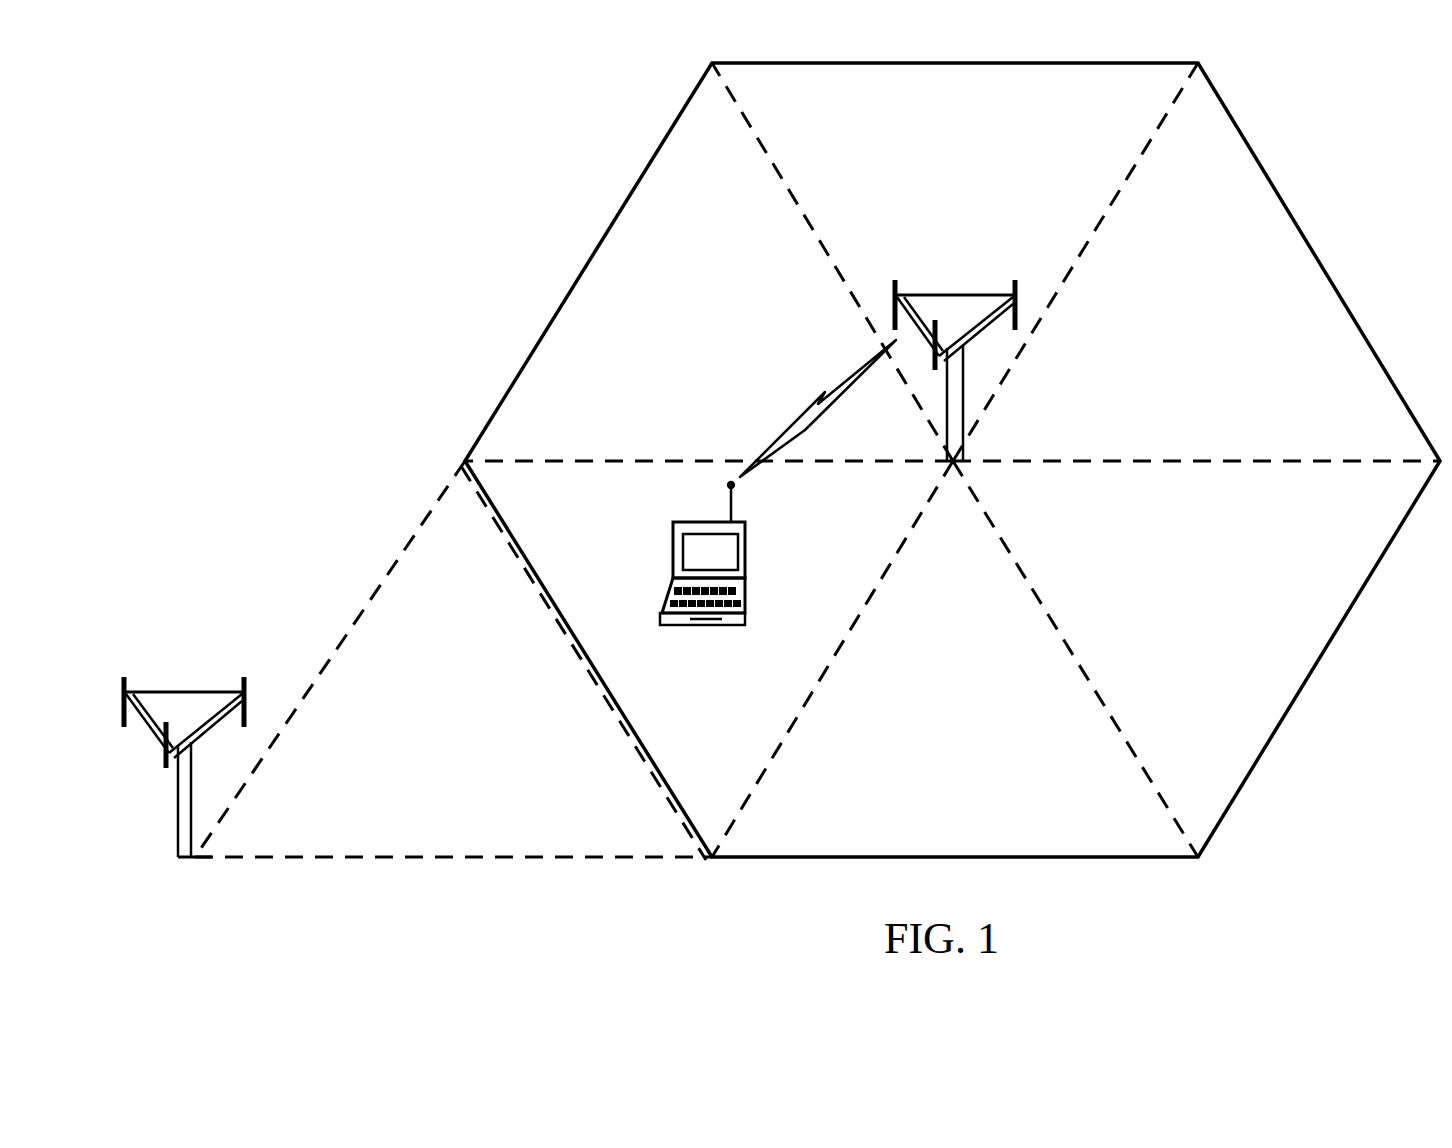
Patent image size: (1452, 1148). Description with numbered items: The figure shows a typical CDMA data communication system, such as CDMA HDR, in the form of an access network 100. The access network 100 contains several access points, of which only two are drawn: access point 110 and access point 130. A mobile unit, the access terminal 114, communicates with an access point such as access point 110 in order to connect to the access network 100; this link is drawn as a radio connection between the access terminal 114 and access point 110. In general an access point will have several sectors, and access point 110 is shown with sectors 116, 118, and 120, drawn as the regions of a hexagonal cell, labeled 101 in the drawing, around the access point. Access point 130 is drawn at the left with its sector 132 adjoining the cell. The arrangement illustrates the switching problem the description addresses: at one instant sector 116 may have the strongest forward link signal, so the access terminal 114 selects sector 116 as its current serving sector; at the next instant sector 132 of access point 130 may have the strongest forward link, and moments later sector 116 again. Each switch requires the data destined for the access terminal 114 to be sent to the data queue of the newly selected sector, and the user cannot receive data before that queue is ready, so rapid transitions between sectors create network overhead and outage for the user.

The access network 100 is at (782, 461).
The cell 101 is at (1291, 215).
The access point 110 is at (919, 295).
The access terminal 114 is at (703, 522).
The sector 116 is at (737, 764).
The sector 118 is at (968, 746).
The sector 120 is at (731, 344).
The access point 130 is at (207, 692).
The sector 132 is at (480, 743).